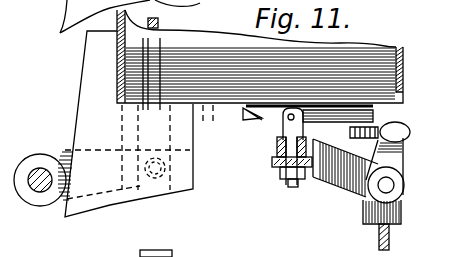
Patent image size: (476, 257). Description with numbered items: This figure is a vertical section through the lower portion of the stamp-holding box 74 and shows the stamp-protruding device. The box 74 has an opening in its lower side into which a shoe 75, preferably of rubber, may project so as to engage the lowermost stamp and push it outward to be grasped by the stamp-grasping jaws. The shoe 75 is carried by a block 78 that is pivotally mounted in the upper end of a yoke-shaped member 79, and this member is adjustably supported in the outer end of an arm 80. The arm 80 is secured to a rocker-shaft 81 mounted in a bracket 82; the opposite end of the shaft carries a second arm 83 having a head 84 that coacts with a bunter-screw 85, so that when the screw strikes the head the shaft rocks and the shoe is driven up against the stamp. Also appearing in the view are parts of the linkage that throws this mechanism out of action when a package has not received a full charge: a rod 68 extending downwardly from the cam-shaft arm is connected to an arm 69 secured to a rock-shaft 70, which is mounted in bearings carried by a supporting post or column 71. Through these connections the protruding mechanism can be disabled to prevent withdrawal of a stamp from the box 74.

The rod 68 is at (189, 25).
The arm 69 is at (108, 178).
The rock-shaft 70 is at (44, 193).
The supporting post or column 71 is at (180, 186).
The stamp-holding box 74 is at (404, 62).
The shoe 75 is at (243, 108).
The block 78 is at (263, 118).
The yoke-shaped member 79 is at (288, 127).
The arm 80 is at (337, 180).
The rocker-shaft 81 is at (388, 187).
The bracket 82 is at (378, 212).
The second arm 83 is at (392, 163).
The head 84 is at (411, 131).
The bunter-screw 85 is at (378, 122).